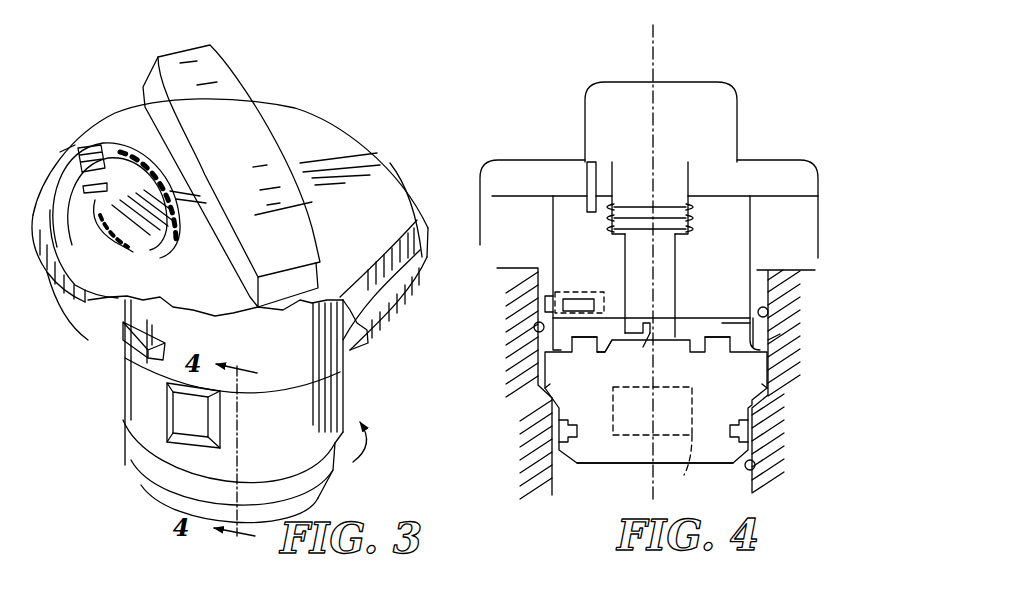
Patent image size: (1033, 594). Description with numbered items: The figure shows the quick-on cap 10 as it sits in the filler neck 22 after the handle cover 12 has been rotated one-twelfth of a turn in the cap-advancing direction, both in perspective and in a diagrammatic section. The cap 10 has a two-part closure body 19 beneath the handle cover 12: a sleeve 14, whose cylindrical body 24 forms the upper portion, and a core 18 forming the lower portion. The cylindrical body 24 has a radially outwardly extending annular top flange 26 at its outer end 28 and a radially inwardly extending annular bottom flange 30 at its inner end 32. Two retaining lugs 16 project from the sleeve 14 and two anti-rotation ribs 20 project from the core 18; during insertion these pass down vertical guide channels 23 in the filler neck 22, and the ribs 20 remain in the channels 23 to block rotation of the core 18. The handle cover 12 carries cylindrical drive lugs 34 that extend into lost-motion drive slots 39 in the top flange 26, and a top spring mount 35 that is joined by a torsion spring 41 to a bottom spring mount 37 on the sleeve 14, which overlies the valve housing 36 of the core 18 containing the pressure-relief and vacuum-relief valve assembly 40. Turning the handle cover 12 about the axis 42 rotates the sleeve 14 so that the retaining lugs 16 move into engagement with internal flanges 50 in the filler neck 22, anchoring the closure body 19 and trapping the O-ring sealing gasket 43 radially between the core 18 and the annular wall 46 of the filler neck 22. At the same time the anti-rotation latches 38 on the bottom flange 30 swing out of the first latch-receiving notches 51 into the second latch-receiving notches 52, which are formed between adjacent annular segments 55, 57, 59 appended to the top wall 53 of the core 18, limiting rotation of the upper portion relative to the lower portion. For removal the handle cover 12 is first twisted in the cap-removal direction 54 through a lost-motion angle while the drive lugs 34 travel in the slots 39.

In FIG. 3, the quick-on cap 10 is at (81, 118).
In FIG. 4, the quick-on cap 10 is at (801, 142).
In FIG. 3, the handle cover 12 is at (344, 116).
In FIG. 4, the handle cover 12 is at (761, 154).
In FIG. 3, the sleeve 14 is at (277, 363).
In FIG. 4, the sleeve 14 is at (757, 256).
In FIG. 3, the retaining lugs 16 is at (130, 347).
In FIG. 4, the retaining lugs 16 is at (577, 298).
In FIG. 3, the core 18 is at (293, 453).
In FIG. 3, the closure body 19 is at (106, 373).
In FIG. 3, the anti-rotation ribs 20 is at (190, 427).
In FIG. 4, the anti-rotation ribs 20 is at (755, 378).
In FIG. 4, the filler neck 22 is at (533, 457).
In FIG. 4, the vertical guide channels 23 is at (530, 323).
In FIG. 3, the cylindrical body 24 is at (314, 320).
In FIG. 4, the cylindrical body 24 is at (552, 230).
In FIG. 3, the annular top flange 26 is at (150, 246).
In FIG. 4, the annular top flange 26 is at (567, 196).
In FIG. 3, the outer end 28 is at (127, 171).
In FIG. 4, the outer end 28 is at (508, 211).
In FIG. 4, the annular bottom flange 30 is at (686, 318).
In FIG. 4, the inner end 32 is at (673, 350).
In FIG. 3, the drive lugs 34 is at (62, 204).
In FIG. 4, the drive lugs 34 is at (587, 182).
In FIG. 4, the top spring mount 35 is at (690, 180).
In FIG. 4, the valve housing 36 is at (625, 463).
In FIG. 4, the bottom spring mount 37 is at (676, 268).
In FIG. 4, the anti-rotation latches 38 is at (638, 318).
In FIG. 3, the lost-motion drive slots 39 is at (99, 207).
In FIG. 4, the pressure-relief and vacuum-relief valve assembly 40 is at (701, 465).
In FIG. 4, the torsion spring 41 is at (697, 209).
In FIG. 4, the axis 42 is at (655, 60).
In FIG. 3, the O-ring sealing gasket 43 is at (143, 453).
In FIG. 4, the O-ring sealing gasket 43 is at (752, 432).
In FIG. 4, the annular wall 46 is at (758, 455).
In FIG. 4, the internal flanges 50 is at (600, 291).
In FIG. 4, the first latch-receiving notches 51 is at (720, 352).
In FIG. 4, the second latch-receiving notches 52 is at (611, 350).
In FIG. 4, the top wall 53 is at (760, 342).
In FIG. 3, the cap-removal direction 54 is at (368, 442).
In FIG. 4, the segment 55 is at (583, 345).
In FIG. 4, the segment 57 is at (649, 340).
In FIG. 4, the segment 59 is at (720, 342).